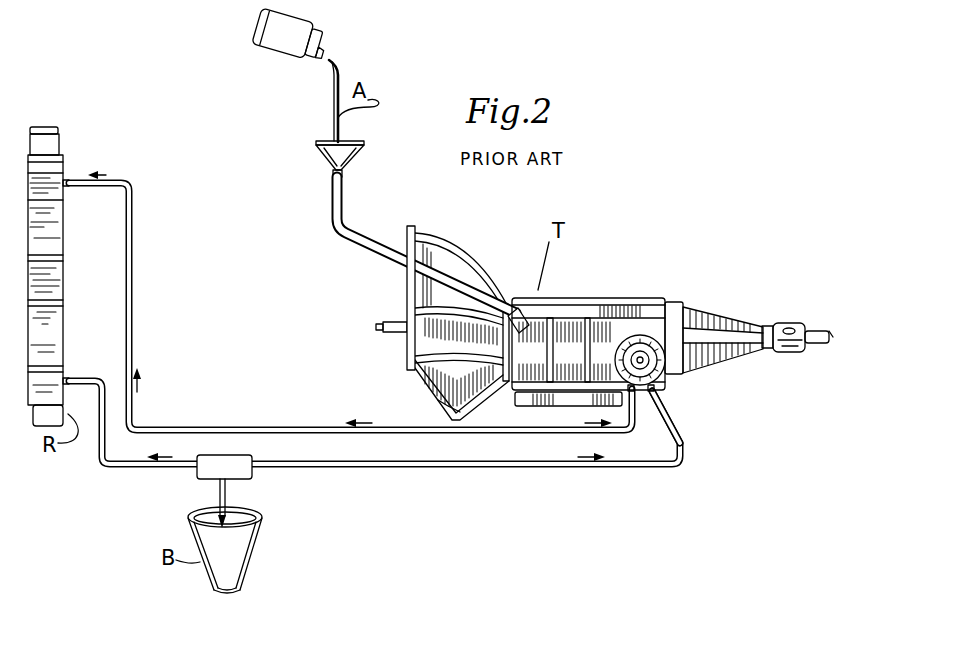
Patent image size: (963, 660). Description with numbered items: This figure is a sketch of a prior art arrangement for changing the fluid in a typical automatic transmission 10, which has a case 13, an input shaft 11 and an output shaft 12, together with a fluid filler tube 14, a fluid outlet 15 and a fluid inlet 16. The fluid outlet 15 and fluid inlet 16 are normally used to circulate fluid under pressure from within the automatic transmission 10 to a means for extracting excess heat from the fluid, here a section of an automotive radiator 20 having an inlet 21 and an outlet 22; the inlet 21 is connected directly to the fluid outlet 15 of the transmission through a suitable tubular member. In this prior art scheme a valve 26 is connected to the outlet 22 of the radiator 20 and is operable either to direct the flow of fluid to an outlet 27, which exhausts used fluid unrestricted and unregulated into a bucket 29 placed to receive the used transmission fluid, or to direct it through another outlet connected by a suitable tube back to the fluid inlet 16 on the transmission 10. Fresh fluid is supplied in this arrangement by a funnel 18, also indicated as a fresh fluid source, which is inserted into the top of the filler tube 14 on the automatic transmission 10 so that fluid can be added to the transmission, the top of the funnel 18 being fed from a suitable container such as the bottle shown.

The automatic transmission 10 is at (642, 322).
The input shaft 11 is at (393, 327).
The output shaft 12 is at (788, 325).
The case 13 is at (617, 302).
The fluid filler tube 14 is at (347, 213).
The fluid outlet 15 is at (660, 413).
The fluid inlet 16 is at (657, 391).
The funnel 18 is at (350, 163).
The radiator 20 is at (62, 152).
The inlet 21 is at (66, 183).
The outlet 22 is at (68, 378).
The valve 26 is at (220, 456).
The outlet 27 is at (228, 497).
The bucket 29 is at (252, 574).